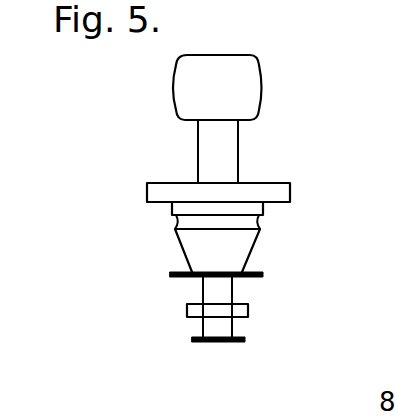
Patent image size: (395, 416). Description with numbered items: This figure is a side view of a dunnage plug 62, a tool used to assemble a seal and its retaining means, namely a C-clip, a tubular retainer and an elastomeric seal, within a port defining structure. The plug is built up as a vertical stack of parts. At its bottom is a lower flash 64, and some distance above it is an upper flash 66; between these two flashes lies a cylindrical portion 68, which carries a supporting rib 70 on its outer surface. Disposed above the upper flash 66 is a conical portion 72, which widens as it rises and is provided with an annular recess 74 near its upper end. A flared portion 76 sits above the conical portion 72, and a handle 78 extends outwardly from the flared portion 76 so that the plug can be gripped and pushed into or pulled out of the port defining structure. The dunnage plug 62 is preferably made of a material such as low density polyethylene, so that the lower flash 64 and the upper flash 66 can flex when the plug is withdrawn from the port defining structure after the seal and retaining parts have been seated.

The dunnage plug 62 is at (128, 283).
The lower flash 64 is at (193, 343).
The upper flash 66 is at (255, 273).
The cylindrical portion 68 is at (232, 292).
The supporting rib 70 is at (248, 312).
The conical portion 72 is at (187, 249).
The annular recess 74 is at (176, 220).
The flared portion 76 is at (147, 192).
The handle 78 is at (257, 79).